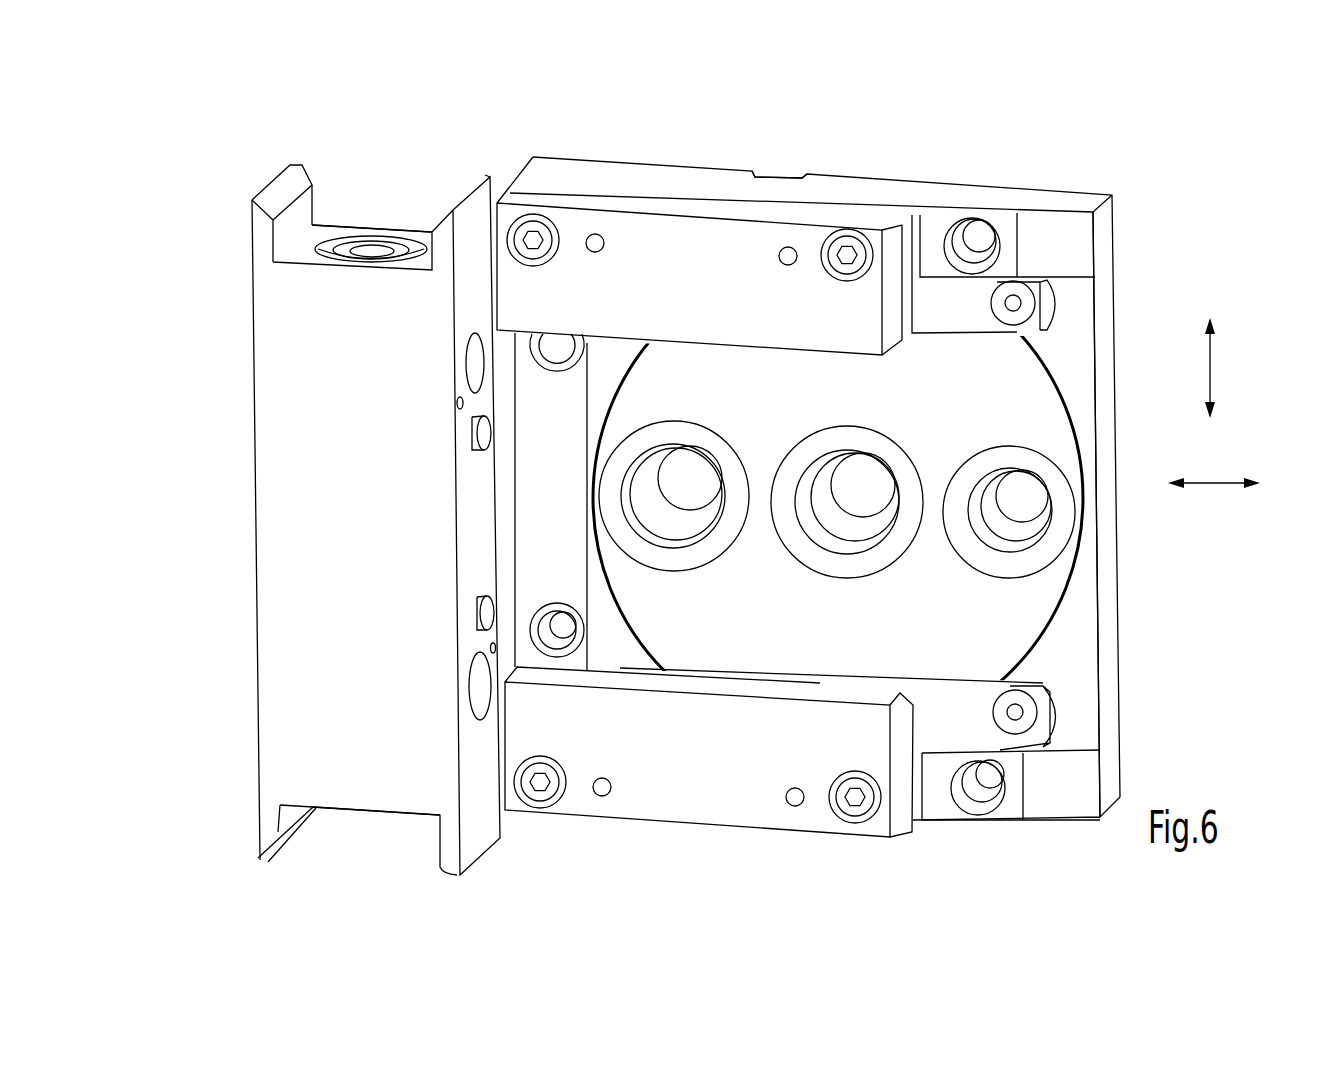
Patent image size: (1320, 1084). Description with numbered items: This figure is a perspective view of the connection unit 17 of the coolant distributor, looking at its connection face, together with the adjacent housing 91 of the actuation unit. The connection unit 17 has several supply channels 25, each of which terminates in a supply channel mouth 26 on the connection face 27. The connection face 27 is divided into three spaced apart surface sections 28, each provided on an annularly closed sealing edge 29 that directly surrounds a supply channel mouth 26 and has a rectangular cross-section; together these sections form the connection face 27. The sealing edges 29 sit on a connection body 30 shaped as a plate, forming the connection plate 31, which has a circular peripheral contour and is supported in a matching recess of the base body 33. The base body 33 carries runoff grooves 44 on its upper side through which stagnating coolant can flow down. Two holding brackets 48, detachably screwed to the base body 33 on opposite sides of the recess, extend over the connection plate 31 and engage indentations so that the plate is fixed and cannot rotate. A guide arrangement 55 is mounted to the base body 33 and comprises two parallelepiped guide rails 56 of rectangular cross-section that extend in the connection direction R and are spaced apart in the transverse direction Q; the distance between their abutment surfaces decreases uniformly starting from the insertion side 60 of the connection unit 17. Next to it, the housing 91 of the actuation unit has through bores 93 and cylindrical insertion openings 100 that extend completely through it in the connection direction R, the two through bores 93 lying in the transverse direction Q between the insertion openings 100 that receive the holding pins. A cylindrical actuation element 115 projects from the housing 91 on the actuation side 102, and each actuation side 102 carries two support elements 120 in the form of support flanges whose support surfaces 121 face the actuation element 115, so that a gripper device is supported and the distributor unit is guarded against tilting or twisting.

The connection unit 17 is at (892, 503).
The supply channel 25 is at (660, 537).
The supply channel mouth 26 is at (708, 460).
The connection face 27 is at (836, 459).
The surface section 28 is at (679, 438).
The sealing edge 29 is at (718, 560).
The connection body 30 is at (940, 498).
The connection plate 31 is at (1057, 578).
The base body 33 is at (607, 173).
The runoff groove 44 is at (785, 173).
The holding bracket 48 is at (933, 302).
The guide arrangement 55 is at (598, 365).
The guide rail 56 is at (678, 243).
The insertion side 60 is at (1131, 367).
The housing 91 is at (285, 492).
The through bore 93 is at (493, 607).
The insertion opening 100 is at (478, 335).
The actuation side 102 is at (428, 192).
The actuation element 115 is at (352, 243).
The support element 120 is at (265, 188).
The support surface 121 is at (298, 219).
The transverse direction Q is at (1212, 360).
The connection direction R is at (1203, 483).